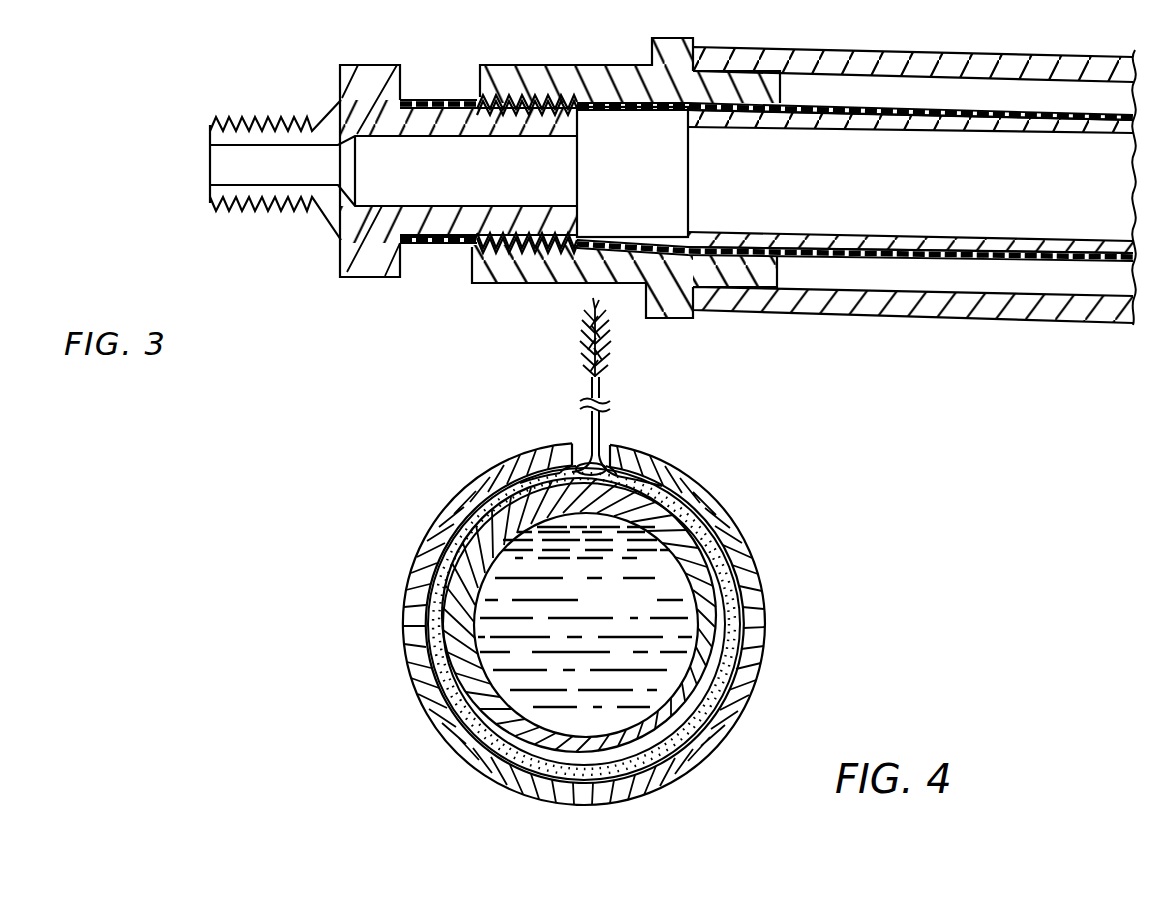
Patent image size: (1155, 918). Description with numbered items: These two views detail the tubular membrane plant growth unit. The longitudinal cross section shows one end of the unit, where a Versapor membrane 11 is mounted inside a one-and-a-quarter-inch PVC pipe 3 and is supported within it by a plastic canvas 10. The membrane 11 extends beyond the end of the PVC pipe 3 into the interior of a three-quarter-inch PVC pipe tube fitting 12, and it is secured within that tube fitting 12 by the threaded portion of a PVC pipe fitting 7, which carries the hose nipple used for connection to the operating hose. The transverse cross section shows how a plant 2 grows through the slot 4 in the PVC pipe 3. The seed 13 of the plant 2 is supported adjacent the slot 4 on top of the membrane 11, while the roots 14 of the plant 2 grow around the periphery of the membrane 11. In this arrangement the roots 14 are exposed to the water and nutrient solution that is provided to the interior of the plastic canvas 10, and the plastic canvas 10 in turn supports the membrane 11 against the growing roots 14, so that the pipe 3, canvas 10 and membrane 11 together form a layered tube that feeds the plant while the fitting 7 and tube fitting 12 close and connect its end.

In FIG. 4, the plant 2 is at (583, 359).
In FIG. 3, the PVC pipe 3 is at (766, 58).
In FIG. 4, the PVC pipe 3 is at (766, 633).
In FIG. 4, the slot 4 is at (604, 458).
In FIG. 3, the PVC pipe fitting 7 is at (345, 73).
In FIG. 3, the plastic canvas 10 is at (1084, 126).
In FIG. 4, the plastic canvas 10 is at (700, 600).
In FIG. 3, the Versapor membrane 11 is at (630, 100).
In FIG. 4, the Versapor membrane 11 is at (720, 596).
In FIG. 3, the PVC pipe tube fitting 12 is at (494, 68).
In FIG. 4, the seed 13 is at (612, 468).
In FIG. 4, the roots 14 is at (632, 478).